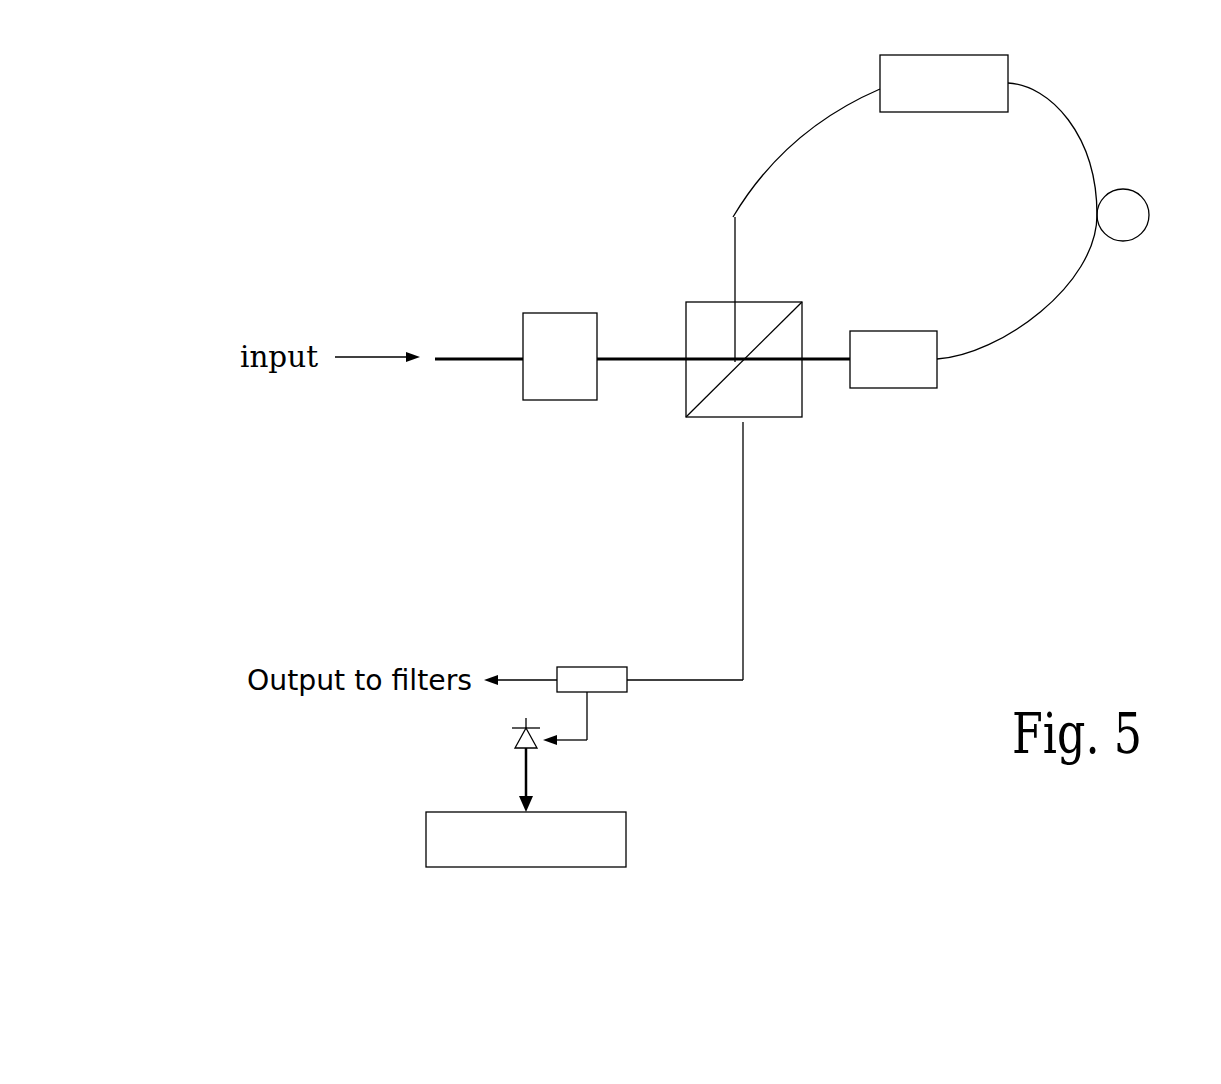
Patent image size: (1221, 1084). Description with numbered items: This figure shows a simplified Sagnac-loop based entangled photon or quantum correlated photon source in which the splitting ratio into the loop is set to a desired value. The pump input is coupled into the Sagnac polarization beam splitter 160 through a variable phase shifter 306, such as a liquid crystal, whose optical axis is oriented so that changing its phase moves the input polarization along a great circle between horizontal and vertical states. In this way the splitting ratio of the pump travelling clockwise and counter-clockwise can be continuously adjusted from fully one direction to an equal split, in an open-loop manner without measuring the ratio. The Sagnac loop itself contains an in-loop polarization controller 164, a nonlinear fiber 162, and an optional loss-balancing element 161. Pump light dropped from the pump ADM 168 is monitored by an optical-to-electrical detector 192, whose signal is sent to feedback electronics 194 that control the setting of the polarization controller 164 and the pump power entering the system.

The phase shifter 306 is at (561, 334).
The Sagnac polarization beam splitter 160 is at (719, 341).
The loss-balancing element 161 is at (893, 339).
The nonlinear fiber 162 is at (1159, 215).
The in-loop polarization controller 164 is at (944, 61).
The pump ADM 168 is at (592, 657).
The optical-to-electrical detector 192 is at (483, 765).
The feedback electronics 194 is at (526, 839).